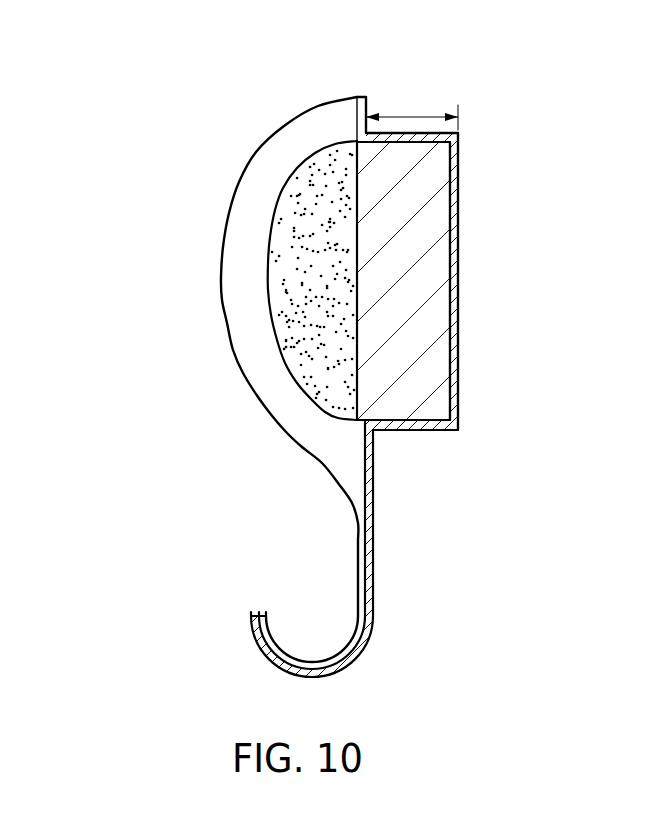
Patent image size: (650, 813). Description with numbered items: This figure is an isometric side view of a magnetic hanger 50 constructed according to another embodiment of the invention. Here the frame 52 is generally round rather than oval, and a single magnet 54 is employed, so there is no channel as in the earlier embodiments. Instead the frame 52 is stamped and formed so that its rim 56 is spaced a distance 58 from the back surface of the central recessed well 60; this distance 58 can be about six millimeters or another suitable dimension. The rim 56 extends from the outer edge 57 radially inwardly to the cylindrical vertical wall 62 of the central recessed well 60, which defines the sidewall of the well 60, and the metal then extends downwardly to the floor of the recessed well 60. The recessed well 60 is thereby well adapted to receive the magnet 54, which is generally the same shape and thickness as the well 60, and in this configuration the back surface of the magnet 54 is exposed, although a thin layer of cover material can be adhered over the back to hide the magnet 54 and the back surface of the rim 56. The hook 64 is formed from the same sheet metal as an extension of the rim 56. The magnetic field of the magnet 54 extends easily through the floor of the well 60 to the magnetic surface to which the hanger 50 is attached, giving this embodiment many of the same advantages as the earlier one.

The magnetic hanger 50 is at (143, 41).
The frame 52 is at (388, 449).
The magnet 54 is at (428, 319).
The rim 56 is at (261, 213).
The outer edge 57 is at (358, 96).
The distance 58 is at (411, 117).
The central recessed well 60 is at (443, 216).
The cylindrical vertical wall 62 is at (428, 150).
The hook 64 is at (252, 640).